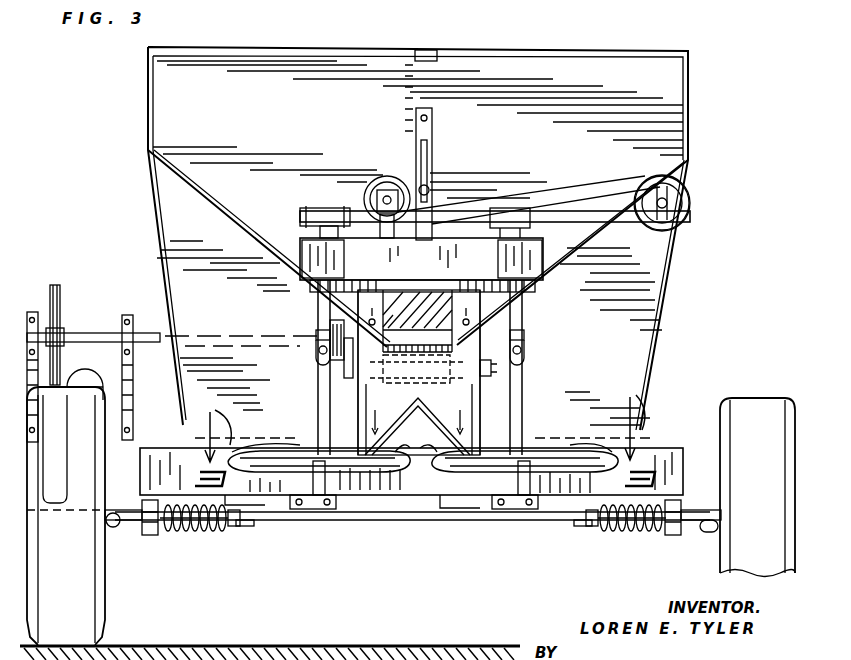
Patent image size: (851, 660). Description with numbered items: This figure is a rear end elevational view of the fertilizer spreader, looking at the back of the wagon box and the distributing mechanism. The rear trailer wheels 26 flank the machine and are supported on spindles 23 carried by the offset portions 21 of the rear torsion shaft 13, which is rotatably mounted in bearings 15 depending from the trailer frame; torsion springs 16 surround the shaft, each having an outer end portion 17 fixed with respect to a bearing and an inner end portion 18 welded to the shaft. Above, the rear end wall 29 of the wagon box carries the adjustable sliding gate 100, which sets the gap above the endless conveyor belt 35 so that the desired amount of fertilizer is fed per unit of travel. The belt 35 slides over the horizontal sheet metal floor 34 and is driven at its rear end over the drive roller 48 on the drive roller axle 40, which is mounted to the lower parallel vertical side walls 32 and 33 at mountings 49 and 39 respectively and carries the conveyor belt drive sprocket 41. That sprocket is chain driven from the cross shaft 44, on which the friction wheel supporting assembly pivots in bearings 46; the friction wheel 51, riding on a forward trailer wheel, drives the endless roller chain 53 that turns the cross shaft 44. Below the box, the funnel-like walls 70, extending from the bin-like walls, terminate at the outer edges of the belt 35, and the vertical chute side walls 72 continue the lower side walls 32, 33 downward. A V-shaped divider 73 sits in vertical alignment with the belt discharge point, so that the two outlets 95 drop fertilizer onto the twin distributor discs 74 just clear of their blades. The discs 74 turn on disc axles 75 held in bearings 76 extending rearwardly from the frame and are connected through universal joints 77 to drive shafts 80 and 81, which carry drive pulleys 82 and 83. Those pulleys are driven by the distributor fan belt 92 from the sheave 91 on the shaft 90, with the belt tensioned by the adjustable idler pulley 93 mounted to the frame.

The trailer wheel supporting torsion shaft 13 is at (410, 522).
The bearings 15 is at (150, 538).
The torsion springs 16 is at (236, 527).
The outer end portions 17 is at (165, 530).
The inner end portion 18 is at (245, 528).
The offset portions 21 is at (105, 518).
The spindles 23 is at (110, 535).
The rear trailer wheels 26 is at (77, 612).
The rear end wall 29 is at (688, 112).
The lower parallel vertical side wall 32 is at (358, 403).
The lower parallel vertical side wall 33 is at (482, 400).
The horizontal sheet metal floor 34 is at (402, 360).
The endless conveyor belt 35 is at (468, 298).
The axle mounting 39 is at (492, 378).
The conveyor belt drive roller axle 40 is at (338, 298).
The conveyor belt drive sprocket 41 is at (330, 387).
The cross shaft 44 is at (212, 337).
The bearings 46 is at (38, 312).
The drive roller 48 is at (460, 373).
The axle mounting 49 is at (352, 378).
The friction wheel 51 is at (103, 385).
The endless roller chain 53 is at (62, 320).
The funnel-like walls 70 is at (318, 298).
The vertical chute side walls 72 is at (320, 460).
The V-shaped divider 73 is at (393, 430).
The twin distributor discs 74 is at (385, 468).
The disc axles 75 is at (532, 412).
The bearings 76 is at (317, 509).
The universal joints 77 is at (316, 346).
The drive shaft 80 is at (320, 232).
The drive shaft 81 is at (530, 232).
The drive pulley 82 is at (300, 214).
The drive pulley 83 is at (562, 217).
The shaft 90 is at (687, 198).
The sheave 91 is at (690, 212).
The distributor fan belt 92 is at (540, 192).
The idler pulley 93 is at (387, 176).
The outlets 95 is at (416, 420).
The adjustable sliding gate 100 is at (404, 288).